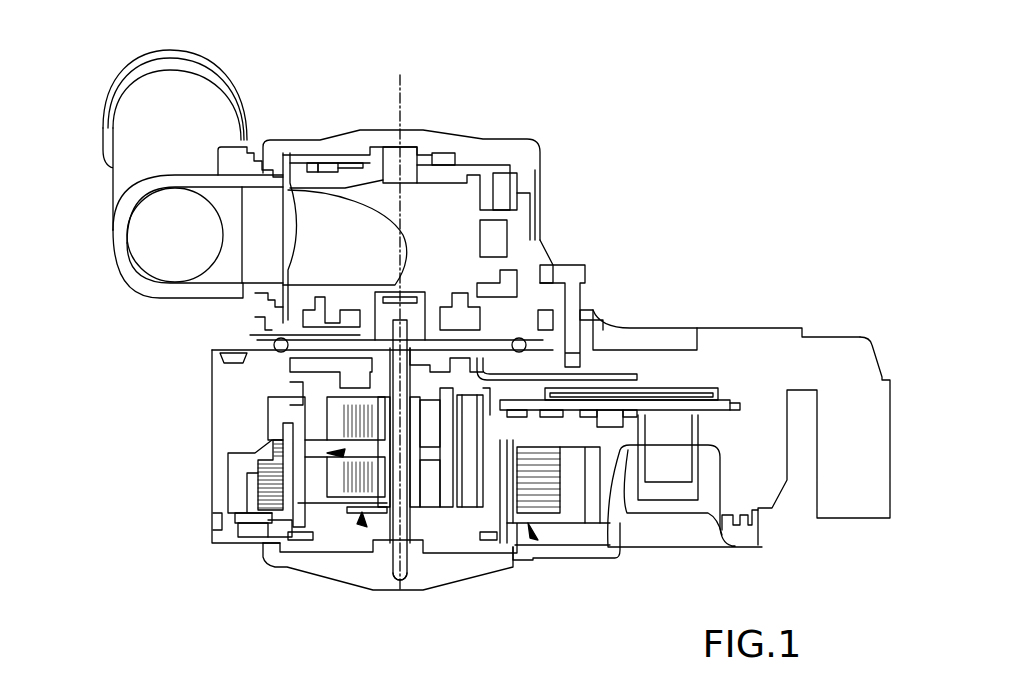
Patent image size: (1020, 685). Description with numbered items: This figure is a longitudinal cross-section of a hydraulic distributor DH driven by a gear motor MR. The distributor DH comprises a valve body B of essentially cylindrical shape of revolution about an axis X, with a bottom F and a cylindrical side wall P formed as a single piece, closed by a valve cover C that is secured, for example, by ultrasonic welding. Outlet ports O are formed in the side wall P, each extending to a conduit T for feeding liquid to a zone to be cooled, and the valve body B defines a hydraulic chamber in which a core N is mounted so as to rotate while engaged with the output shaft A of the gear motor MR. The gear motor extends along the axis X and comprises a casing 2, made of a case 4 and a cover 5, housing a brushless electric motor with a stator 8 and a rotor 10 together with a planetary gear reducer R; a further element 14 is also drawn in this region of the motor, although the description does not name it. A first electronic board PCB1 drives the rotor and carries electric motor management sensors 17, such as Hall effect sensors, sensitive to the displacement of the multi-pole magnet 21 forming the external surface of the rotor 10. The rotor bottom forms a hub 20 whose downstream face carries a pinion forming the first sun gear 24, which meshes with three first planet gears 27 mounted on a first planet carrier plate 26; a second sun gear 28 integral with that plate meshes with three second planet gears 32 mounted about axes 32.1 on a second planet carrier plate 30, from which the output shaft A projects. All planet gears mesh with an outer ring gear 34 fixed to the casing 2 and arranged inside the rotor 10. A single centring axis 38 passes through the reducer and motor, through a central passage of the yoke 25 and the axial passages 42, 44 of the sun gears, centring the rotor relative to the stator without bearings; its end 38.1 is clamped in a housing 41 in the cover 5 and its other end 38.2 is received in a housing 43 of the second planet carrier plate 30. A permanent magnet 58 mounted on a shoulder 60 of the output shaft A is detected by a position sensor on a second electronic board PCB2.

The casing 2 is at (828, 310).
The case 4 is at (833, 362).
The cover 5 is at (585, 557).
The stator 8 is at (537, 562).
The rotor 10 is at (300, 428).
The housing wall 14 is at (555, 510).
The electric motor management sensors 17 is at (628, 417).
The hub 20 is at (320, 525).
The multi-pole magnet 21 is at (518, 500).
The first sun gear 24 is at (465, 500).
The yoke 25 is at (478, 470).
The first planet carrier plate 26 is at (270, 480).
The first planet gears 27 is at (303, 567).
The second sun gear 28 is at (285, 455).
The second planet carrier plate 30 is at (340, 380).
The second planet gears 32 is at (350, 405).
The axes of the second planet gears 32.1 is at (513, 373).
The outer ring gear 34 is at (265, 500).
The centring axis 38 is at (352, 590).
The longitudinal end of the centring axis 38.1 is at (396, 585).
The other end of the centring axis 38.2 is at (395, 322).
The housing 41 is at (503, 430).
The axial passage 42 is at (435, 520).
The housing 43 is at (556, 268).
The axial passage 44 is at (417, 350).
The permanent magnet 58 is at (340, 255).
The shoulder 60 is at (300, 388).
The conduit T is at (195, 100).
The axis X is at (405, 80).
The bottom F is at (388, 145).
The valve cover C is at (280, 250).
The output shaft A is at (380, 262).
The core N is at (440, 207).
The valve body B is at (540, 160).
The hydraulic distributor DH is at (565, 185).
The cylindrical side wall P is at (527, 203).
The outlet ports O is at (263, 222).
The first electronic board PCB1 is at (650, 395).
The second electronic board PCB2 is at (305, 336).
The gear motor MR is at (175, 527).
The planetary gear reducer R is at (362, 515).